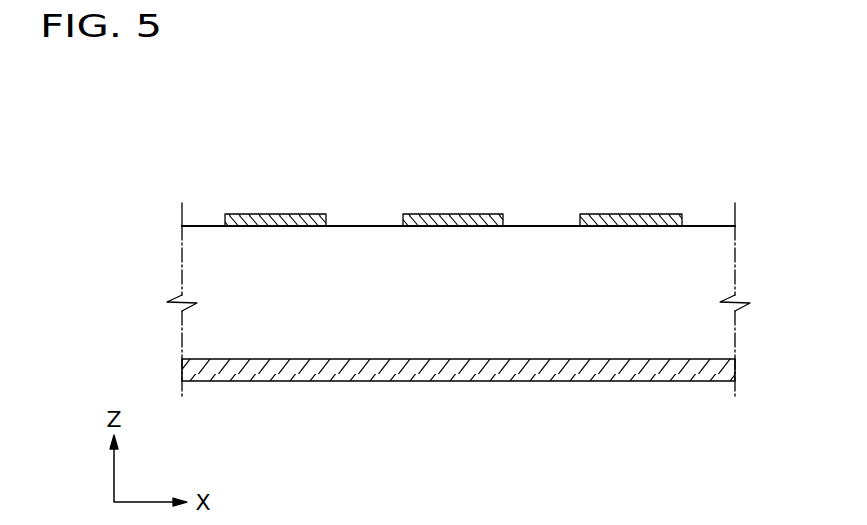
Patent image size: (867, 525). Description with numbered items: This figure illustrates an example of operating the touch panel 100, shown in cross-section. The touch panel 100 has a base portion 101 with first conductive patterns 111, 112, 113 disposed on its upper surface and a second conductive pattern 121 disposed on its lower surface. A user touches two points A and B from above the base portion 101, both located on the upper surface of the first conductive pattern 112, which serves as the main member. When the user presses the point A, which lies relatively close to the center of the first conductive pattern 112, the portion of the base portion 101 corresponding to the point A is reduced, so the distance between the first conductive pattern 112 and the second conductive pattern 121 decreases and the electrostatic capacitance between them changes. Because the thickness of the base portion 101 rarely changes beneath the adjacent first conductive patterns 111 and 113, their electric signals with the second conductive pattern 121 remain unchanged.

The touch panel 100 is at (730, 150).
The base portion 101 is at (713, 271).
The first conductive pattern 111 is at (271, 214).
The first conductive pattern 112 is at (415, 214).
The first conductive pattern 113 is at (648, 214).
The second conductive pattern 121 is at (715, 364).
The point A is at (453, 214).
The point B is at (487, 214).